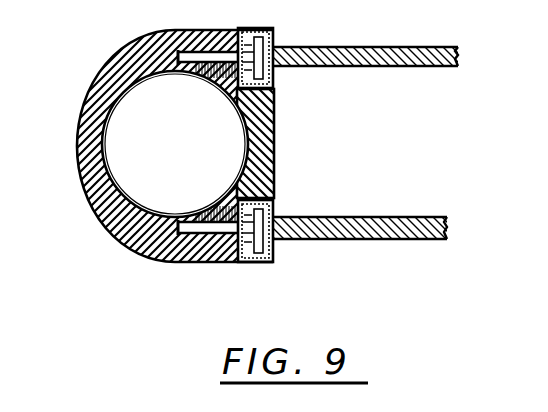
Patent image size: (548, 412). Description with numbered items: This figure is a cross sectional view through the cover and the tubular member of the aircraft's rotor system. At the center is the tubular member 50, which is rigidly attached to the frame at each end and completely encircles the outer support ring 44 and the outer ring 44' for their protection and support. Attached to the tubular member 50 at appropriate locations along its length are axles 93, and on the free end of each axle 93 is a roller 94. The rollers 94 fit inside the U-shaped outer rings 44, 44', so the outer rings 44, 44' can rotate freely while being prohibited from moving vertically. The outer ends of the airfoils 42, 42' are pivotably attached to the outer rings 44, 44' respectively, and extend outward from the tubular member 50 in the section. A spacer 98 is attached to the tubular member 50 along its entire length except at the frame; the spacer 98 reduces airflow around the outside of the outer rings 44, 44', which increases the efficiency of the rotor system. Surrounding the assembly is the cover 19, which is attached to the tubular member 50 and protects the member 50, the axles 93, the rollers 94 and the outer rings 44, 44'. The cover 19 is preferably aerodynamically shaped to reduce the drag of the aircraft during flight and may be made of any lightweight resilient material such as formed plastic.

The cover 19 is at (83, 111).
The tubular member 50 is at (108, 147).
The axle 93 is at (211, 33).
The spacer 98 is at (275, 150).
The roller 94 is at (273, 77).
The outer support ring 44 is at (285, 31).
The outer ring 44' is at (265, 283).
The airfoil 42 is at (365, 77).
The airfoil 42' is at (360, 248).